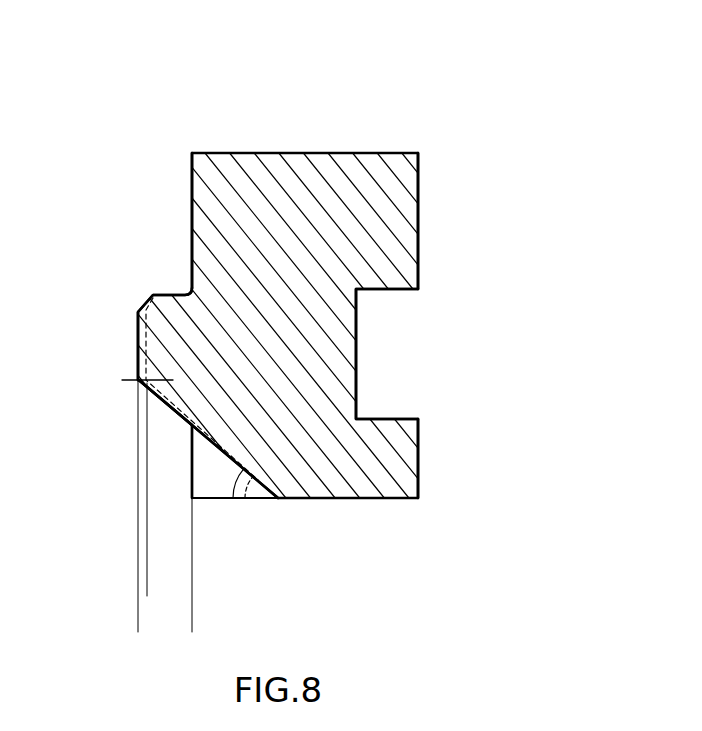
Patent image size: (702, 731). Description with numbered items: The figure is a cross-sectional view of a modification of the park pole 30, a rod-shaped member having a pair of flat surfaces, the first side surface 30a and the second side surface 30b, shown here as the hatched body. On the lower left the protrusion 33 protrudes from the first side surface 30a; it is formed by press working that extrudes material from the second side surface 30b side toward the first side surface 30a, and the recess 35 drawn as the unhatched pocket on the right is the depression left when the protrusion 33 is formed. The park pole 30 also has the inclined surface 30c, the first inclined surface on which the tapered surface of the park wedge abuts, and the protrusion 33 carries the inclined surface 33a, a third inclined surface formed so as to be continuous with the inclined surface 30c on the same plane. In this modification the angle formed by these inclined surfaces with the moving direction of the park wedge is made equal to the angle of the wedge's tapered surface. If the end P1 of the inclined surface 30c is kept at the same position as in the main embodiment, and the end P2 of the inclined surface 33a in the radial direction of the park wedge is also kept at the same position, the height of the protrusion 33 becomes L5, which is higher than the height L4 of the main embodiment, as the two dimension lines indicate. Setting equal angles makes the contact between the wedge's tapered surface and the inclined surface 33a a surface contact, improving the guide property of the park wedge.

The park pole 30 is at (297, 153).
The first side surface 30a is at (192, 251).
The second side surface 30b is at (418, 247).
The inclined surface 30c is at (230, 457).
The protrusion 33 is at (162, 322).
The inclined surface 33a is at (168, 403).
The recess 35 is at (392, 357).
The end of the inclined surface 30c P1 is at (280, 500).
The end of the inclined surface 33a P2 is at (139, 378).
The height L4 is at (147, 588).
The height L5 is at (138, 625).